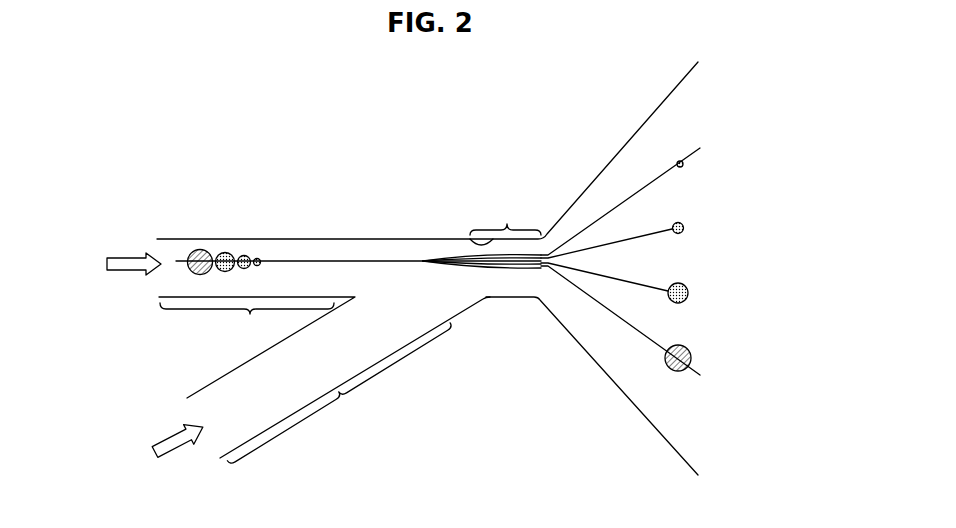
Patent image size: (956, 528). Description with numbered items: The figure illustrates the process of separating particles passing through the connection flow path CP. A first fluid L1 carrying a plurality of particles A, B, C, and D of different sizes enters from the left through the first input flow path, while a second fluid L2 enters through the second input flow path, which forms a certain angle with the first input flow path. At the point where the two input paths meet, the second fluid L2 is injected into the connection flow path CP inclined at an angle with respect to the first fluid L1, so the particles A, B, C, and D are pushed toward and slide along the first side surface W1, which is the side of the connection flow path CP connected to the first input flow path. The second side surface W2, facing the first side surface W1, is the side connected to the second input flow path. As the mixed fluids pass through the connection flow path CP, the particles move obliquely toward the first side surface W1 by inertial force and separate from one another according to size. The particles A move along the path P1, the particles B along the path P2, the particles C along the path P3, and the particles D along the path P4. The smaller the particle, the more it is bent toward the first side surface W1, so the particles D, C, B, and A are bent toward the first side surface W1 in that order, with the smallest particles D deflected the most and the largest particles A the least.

The particles A is at (198, 250).
The particles B is at (225, 253).
The particles C is at (245, 256).
The particles D is at (259, 259).
The path P1 is at (700, 375).
The path P2 is at (689, 297).
The path P3 is at (685, 227).
The path P4 is at (700, 148).
The first side surface W1 is at (472, 239).
The second side surface W2 is at (517, 298).
The connection flow path CP is at (482, 228).
The first fluid L1 is at (250, 264).
The second fluid L2 is at (168, 447).